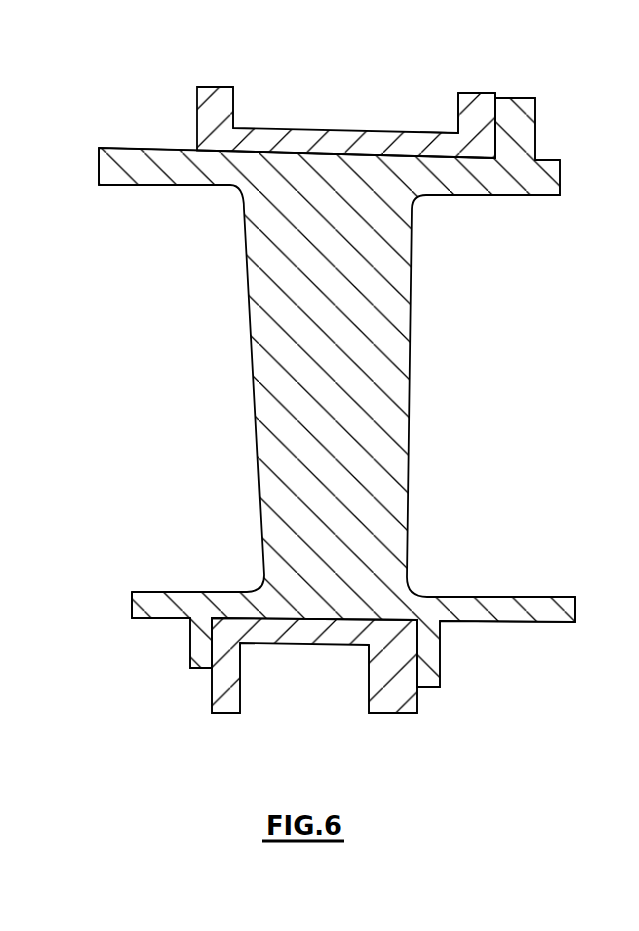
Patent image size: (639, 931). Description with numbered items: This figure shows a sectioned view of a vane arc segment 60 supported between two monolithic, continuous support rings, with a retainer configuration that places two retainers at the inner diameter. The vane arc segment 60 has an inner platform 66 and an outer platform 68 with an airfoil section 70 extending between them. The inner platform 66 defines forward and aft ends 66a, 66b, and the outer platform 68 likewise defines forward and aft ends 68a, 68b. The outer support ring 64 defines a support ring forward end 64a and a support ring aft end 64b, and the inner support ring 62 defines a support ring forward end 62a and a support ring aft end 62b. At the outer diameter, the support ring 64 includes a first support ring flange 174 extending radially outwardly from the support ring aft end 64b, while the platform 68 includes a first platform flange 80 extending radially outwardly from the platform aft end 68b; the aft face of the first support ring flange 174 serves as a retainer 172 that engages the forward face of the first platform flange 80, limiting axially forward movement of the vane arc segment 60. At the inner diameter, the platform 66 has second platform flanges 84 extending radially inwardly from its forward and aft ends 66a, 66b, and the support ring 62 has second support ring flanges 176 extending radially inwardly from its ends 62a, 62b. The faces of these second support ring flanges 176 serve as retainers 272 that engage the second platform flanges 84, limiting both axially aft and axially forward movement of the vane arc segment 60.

The vane arc segment 60 is at (176, 362).
The inner support ring 62 is at (333, 636).
The support ring forward end 62a is at (248, 653).
The support ring aft end 62b is at (360, 650).
The outer support ring 64 is at (308, 138).
The support ring forward end 64a is at (243, 117).
The support ring aft end 64b is at (443, 125).
The inner platform 66 is at (463, 605).
The forward end of inner platform 66a is at (147, 589).
The aft end of inner platform 66b is at (562, 590).
The outer platform 68 is at (155, 186).
The forward end of outer platform 68a is at (112, 188).
The aft end of outer platform 68b is at (507, 197).
The airfoil section 70 is at (255, 410).
The first platform flange 80 is at (527, 125).
The second platform flanges 84 is at (197, 635).
The retainer 172 is at (500, 92).
The first support ring flange 174 is at (466, 99).
The second support ring flanges 176 is at (227, 702).
The retainer 272 is at (207, 676).